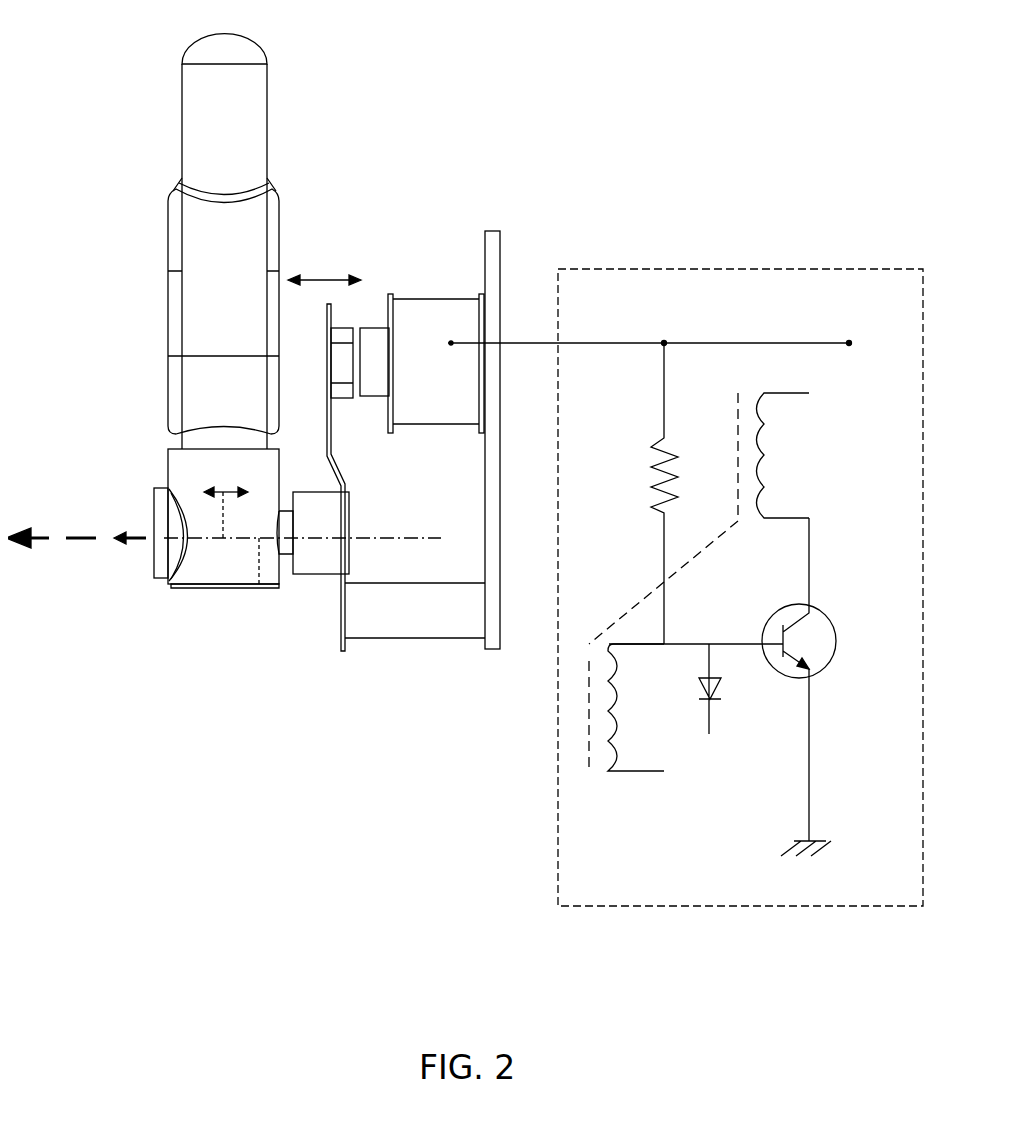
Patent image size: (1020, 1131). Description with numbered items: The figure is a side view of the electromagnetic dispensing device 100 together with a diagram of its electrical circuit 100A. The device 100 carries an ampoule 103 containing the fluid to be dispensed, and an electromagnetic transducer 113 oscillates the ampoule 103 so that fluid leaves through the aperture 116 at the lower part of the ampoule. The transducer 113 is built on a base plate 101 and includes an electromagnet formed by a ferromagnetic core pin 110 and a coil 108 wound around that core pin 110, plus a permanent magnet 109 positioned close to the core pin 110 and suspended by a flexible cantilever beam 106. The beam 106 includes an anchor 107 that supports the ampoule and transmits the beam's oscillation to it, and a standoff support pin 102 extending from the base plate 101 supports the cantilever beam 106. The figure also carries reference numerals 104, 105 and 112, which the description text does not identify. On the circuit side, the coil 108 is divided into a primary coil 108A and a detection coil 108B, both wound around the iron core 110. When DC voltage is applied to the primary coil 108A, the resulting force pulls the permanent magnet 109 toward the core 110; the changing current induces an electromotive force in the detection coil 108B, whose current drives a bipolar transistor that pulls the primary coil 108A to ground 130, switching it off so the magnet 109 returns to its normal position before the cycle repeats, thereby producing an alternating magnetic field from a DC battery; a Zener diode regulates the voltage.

The electromagnetic dispensing device 100 is at (367, 218).
The circuit 100A is at (797, 265).
The base plate 101 is at (497, 228).
The standoff support pin 102 is at (397, 615).
The ampoule 103 is at (215, 93).
The lens holder 104 is at (258, 585).
The light output 105 is at (160, 535).
The flexible cantilever beam 106 is at (333, 450).
The anchor 107 is at (317, 557).
The coil 108 is at (448, 347).
The primary coil 108A is at (704, 518).
The detection coil 108B is at (634, 707).
The permanent magnet 109 is at (341, 362).
The ferromagnetic core pin 110 is at (368, 350).
The movement direction 112 is at (317, 279).
The electromagnetic transducer 113 is at (118, 541).
The aperture 116 is at (218, 487).
The ground 130 is at (698, 252).